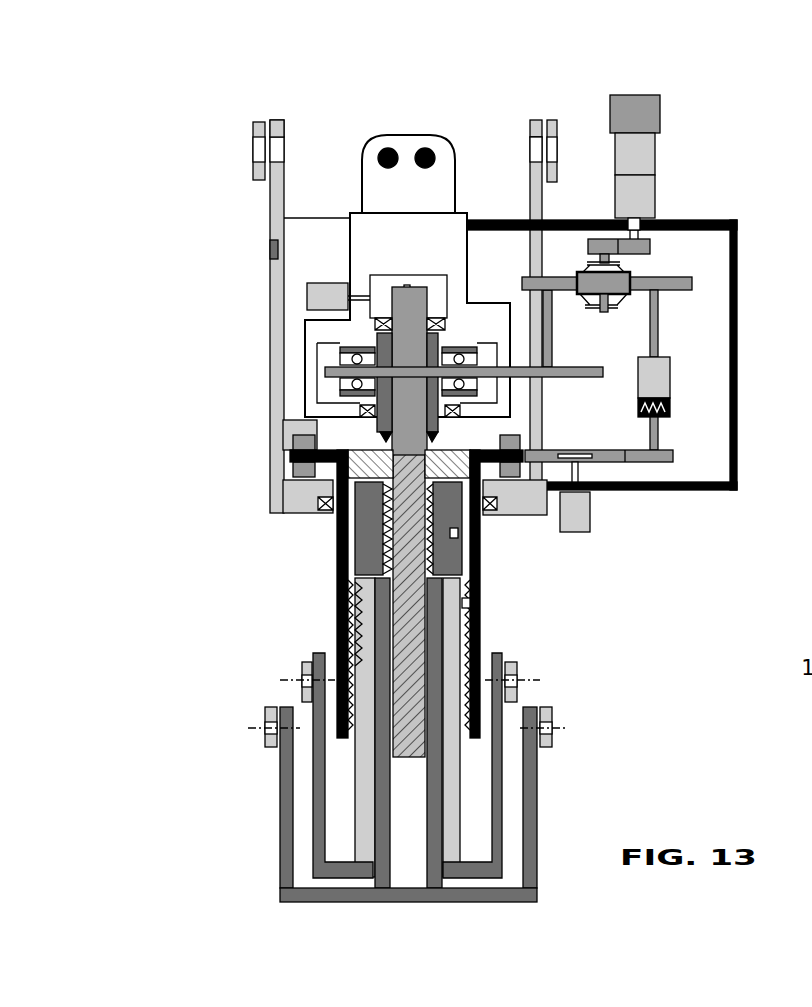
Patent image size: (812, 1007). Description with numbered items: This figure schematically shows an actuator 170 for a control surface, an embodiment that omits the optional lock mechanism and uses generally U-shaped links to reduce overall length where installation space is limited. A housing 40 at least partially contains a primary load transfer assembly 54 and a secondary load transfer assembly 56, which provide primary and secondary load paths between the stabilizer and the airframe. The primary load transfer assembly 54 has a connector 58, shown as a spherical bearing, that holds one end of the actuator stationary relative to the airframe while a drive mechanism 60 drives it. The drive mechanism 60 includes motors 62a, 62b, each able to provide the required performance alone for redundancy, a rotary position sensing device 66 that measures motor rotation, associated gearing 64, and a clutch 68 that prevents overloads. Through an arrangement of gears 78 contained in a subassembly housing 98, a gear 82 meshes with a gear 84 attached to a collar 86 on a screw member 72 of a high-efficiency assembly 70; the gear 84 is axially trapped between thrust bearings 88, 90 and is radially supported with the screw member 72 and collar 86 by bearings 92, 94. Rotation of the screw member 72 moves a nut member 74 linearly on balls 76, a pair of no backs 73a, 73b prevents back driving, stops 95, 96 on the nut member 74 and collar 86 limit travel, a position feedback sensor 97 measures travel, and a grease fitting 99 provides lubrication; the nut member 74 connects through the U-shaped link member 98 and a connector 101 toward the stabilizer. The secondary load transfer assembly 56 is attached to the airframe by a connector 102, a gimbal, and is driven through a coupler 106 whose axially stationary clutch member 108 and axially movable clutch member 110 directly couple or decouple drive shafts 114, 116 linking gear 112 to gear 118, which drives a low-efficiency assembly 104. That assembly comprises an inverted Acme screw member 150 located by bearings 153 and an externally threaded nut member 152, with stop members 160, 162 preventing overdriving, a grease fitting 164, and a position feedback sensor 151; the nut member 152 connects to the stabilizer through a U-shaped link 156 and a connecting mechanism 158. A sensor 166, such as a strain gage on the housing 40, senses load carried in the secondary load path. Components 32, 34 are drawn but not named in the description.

The actuator 170 is at (280, 80).
The fastener post 32 is at (257, 130).
The connector 102 is at (290, 108).
The housing 40 is at (272, 210).
The sensor 166 is at (272, 251).
The connector 58 is at (410, 130).
The link member 98 is at (350, 215).
The arrangement of gears 78 is at (500, 270).
The bearing 94 is at (382, 322).
The position feedback sensor 97 is at (320, 297).
The thrust bearing 88 is at (343, 350).
The no back 73a is at (340, 362).
The no back 73b is at (350, 392).
The thrust bearing 90 is at (360, 406).
The bearing 92 is at (352, 423).
The high-efficiency assembly 70 is at (346, 438).
The bearings 153 is at (318, 505).
The primary load transfer assembly 54 is at (245, 552).
The nut member 74 is at (338, 537).
The balls 76 is at (355, 565).
The screw member 72 is at (403, 583).
The stop member 160 is at (320, 660).
The connector 101 is at (300, 655).
The bolt 34 is at (302, 678).
The connecting mechanism 158 is at (282, 707).
The stop member 162 is at (340, 745).
The collar 86 is at (437, 340).
The gear 84 is at (545, 365).
The gear 82 is at (558, 378).
The stop 96 is at (434, 440).
The stop 95 is at (490, 512).
The grease fitting 99 is at (458, 536).
The screw member 150 is at (480, 582).
The grease fitting 164 is at (485, 603).
The nut member 152 is at (480, 625).
The link 156 is at (436, 826).
The low-efficiency assembly 104 is at (605, 600).
The secondary load transfer assembly 56 is at (668, 545).
The position feedback sensor 151 is at (575, 532).
The gear 118 is at (645, 462).
The drive shaft 116 is at (660, 440).
The clutch member 110 is at (672, 410).
The clutch member 108 is at (672, 402).
The coupler 106 is at (662, 372).
The drive shaft 114 is at (660, 320).
The gear 112 is at (668, 282).
The drive mechanism 60 is at (662, 197).
The rotary position sensing device 66 is at (655, 106).
The motor 62a is at (650, 165).
The motor 62b is at (650, 196).
The gearing 64 is at (605, 245).
The clutch 68 is at (585, 270).